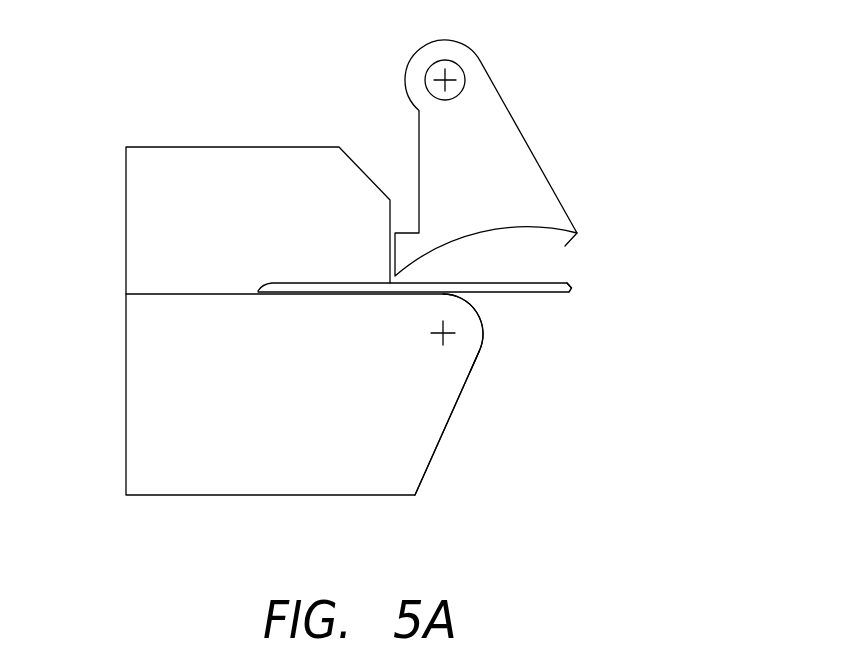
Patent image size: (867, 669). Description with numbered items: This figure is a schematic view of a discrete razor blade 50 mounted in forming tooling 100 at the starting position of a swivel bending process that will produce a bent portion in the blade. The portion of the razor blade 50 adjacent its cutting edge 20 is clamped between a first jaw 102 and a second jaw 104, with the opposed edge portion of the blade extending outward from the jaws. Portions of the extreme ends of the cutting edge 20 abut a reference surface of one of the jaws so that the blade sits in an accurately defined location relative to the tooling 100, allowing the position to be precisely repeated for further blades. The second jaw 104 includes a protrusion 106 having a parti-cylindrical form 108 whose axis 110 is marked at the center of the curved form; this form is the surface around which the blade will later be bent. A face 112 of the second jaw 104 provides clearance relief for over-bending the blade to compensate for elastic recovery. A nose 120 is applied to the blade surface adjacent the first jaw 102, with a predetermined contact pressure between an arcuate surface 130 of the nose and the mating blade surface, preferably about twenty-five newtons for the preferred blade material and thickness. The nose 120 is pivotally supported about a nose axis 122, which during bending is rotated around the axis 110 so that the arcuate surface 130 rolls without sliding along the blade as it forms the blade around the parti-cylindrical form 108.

The tooling 100 is at (170, 67).
The first jaw 102 is at (301, 174).
The second jaw 104 is at (302, 480).
The protrusion 106 is at (464, 318).
The parti-cylindrical form 108 is at (487, 328).
The axis 110 is at (443, 333).
The face 112 is at (445, 435).
The cutting edge 20 is at (260, 287).
The razor blade 50 is at (572, 287).
The nose 120 is at (540, 163).
The nose axis 122 is at (445, 80).
The arcuate surface 130 is at (566, 246).